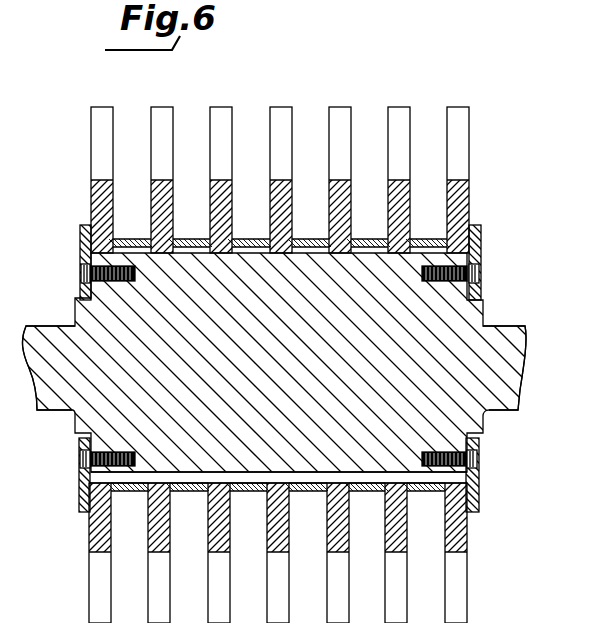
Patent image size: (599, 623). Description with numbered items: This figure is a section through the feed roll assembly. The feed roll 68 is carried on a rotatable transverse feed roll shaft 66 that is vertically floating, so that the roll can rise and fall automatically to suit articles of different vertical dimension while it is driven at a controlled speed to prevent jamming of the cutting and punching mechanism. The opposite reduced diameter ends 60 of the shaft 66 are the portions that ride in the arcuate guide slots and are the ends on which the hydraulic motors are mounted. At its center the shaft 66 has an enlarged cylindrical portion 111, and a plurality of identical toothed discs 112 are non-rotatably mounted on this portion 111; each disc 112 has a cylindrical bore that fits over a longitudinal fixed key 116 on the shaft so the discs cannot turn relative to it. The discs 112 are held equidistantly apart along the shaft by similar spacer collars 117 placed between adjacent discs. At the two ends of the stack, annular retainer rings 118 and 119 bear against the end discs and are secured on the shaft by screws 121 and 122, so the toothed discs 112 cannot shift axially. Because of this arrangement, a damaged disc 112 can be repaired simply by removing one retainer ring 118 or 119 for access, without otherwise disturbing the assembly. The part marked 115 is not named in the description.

The reduced diameter ends 60 is at (48, 333).
The feed roll shaft 66 is at (458, 322).
The feed roll 68 is at (310, 129).
The enlarged cylindrical portion 111 is at (430, 262).
The toothed disc 112 is at (469, 190).
The plate 115 is at (347, 480).
The longitudinal fixed key 116 is at (282, 478).
The spacer collar 117 is at (195, 497).
The annular retainer ring 118 is at (83, 492).
The annular retainer ring 119 is at (478, 492).
The screw 121 is at (82, 460).
The screw 122 is at (478, 460).